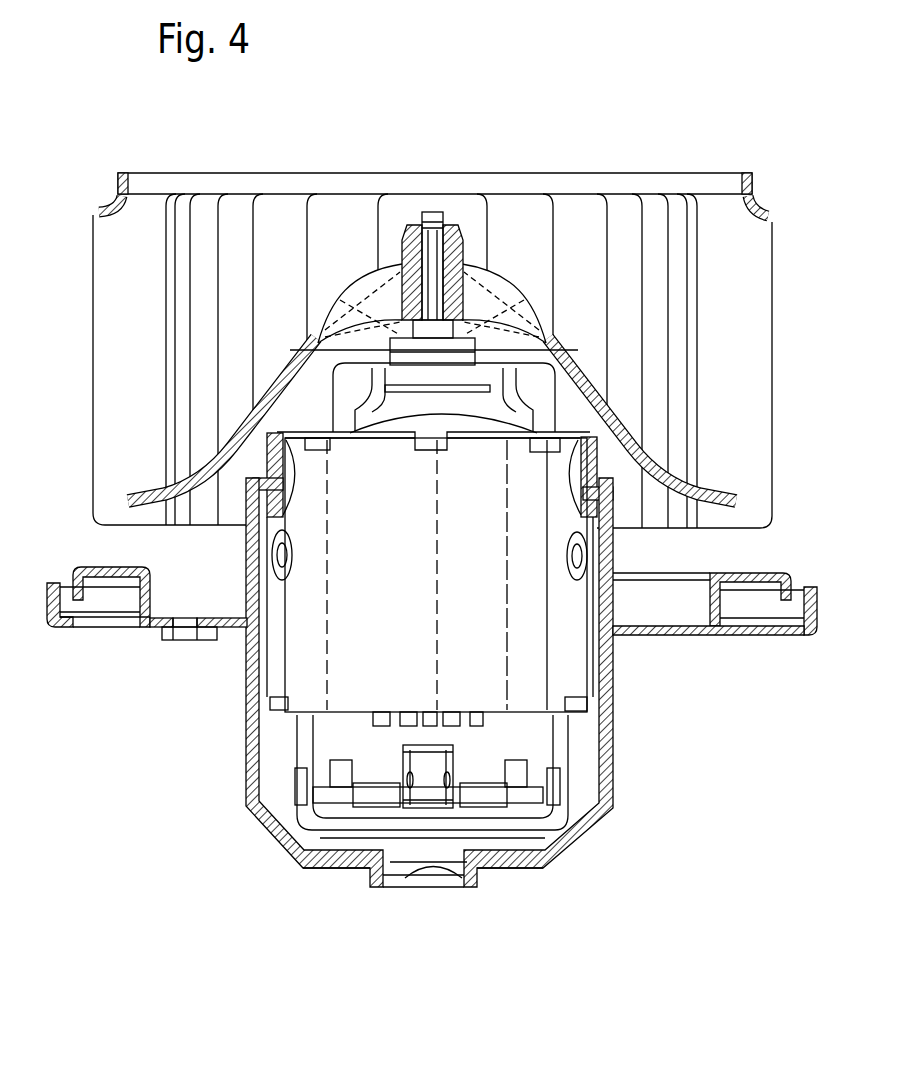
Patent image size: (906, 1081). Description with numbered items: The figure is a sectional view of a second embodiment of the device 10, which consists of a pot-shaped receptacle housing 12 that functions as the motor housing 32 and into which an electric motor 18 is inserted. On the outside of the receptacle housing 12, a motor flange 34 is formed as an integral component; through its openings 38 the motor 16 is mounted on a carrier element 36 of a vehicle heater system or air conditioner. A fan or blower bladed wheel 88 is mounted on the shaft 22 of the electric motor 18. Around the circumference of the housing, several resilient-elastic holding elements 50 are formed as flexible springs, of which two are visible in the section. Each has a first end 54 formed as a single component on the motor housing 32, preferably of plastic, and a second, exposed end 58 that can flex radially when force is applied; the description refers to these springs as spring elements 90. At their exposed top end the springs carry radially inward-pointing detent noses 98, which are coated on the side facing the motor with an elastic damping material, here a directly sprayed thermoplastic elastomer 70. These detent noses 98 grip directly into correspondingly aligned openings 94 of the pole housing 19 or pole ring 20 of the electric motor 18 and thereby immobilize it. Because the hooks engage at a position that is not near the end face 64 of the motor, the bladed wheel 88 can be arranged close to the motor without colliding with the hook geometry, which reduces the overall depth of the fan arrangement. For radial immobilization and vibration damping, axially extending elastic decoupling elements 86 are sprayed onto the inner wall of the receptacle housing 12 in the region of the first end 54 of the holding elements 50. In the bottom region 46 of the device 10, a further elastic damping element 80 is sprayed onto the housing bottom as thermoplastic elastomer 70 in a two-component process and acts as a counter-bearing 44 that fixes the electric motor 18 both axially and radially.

The device 10 is at (248, 850).
The receptacle housing 12 is at (615, 750).
The motor 16 is at (330, 750).
The electric motor 18 is at (431, 775).
The pole housing 19 is at (297, 667).
The pole ring 20 is at (428, 575).
The shaft 22 is at (433, 212).
The motor housing 32 is at (429, 682).
The motor flange 34 is at (95, 605).
The carrier element 36 is at (204, 640).
The openings 38 is at (187, 622).
The counter-bearing 44 is at (425, 874).
The bottom region 46 is at (522, 872).
The resilient-elastic holding elements 50 is at (247, 512).
The first end 54 is at (615, 563).
The second, exposed end 58 is at (607, 478).
The end face 64 is at (303, 429).
The thermoplastic elastomer 70 is at (615, 643).
The further elastic damping element 80 is at (492, 874).
The elastic decoupling elements 86 is at (252, 665).
The fan and/or blower bladed wheel 88 is at (623, 235).
The spring elements 90 is at (433, 489).
The openings 94 is at (275, 463).
The detent noses 98 is at (250, 478).